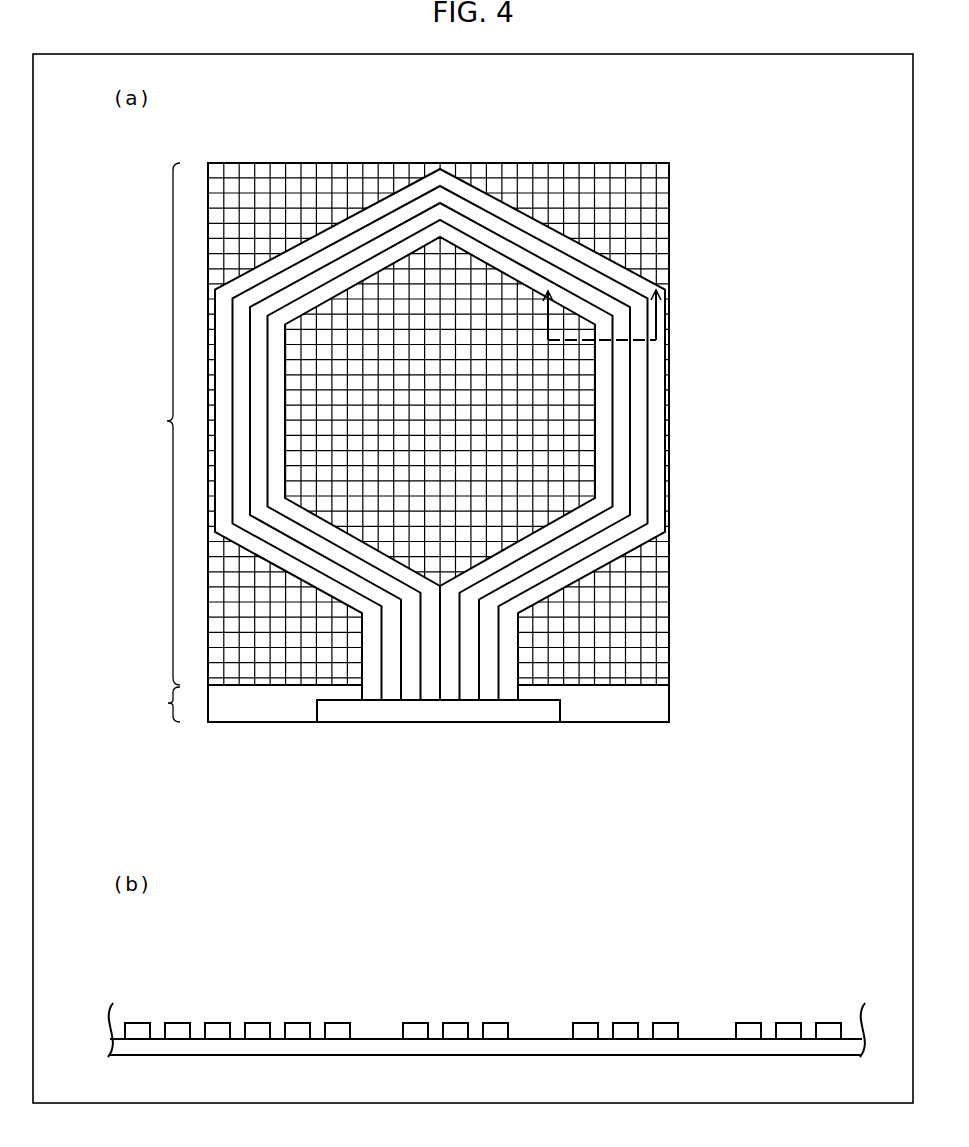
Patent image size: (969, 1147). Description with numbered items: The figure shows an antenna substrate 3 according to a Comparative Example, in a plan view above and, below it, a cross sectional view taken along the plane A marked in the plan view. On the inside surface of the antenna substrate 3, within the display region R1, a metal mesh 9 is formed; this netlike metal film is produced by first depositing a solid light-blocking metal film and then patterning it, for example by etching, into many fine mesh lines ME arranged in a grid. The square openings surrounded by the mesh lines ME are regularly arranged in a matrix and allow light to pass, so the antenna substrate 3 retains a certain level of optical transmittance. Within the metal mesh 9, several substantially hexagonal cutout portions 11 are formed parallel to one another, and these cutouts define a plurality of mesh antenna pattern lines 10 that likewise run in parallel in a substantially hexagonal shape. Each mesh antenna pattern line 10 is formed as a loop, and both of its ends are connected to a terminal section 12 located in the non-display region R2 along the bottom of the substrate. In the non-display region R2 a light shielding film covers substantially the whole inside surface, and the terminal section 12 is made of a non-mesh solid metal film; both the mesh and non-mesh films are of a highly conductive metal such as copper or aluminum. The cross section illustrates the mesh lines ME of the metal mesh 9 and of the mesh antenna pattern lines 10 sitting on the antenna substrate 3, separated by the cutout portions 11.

The antenna substrate 3 is at (460, 570).
The metal mesh 9 is at (493, 468).
The mesh antenna pattern line 10 is at (648, 377).
The cutout portion 11 is at (538, 280).
The terminal section 12 is at (550, 712).
The mesh line ME is at (585, 652).
The display region R1 is at (155, 424).
The non-display region R2 is at (155, 704).
The plane AA A is at (603, 315).